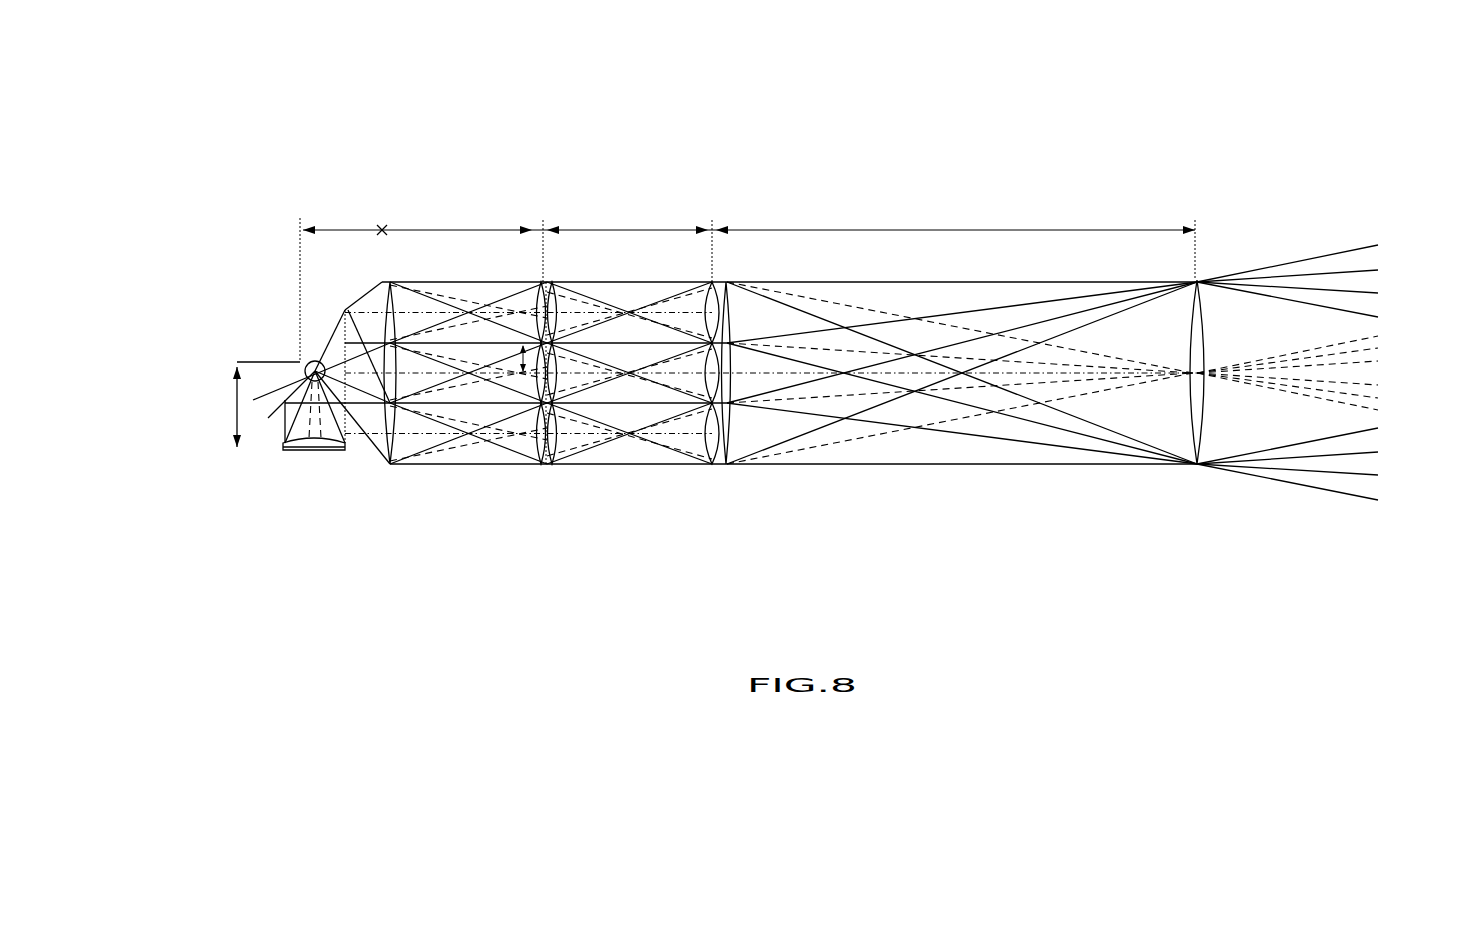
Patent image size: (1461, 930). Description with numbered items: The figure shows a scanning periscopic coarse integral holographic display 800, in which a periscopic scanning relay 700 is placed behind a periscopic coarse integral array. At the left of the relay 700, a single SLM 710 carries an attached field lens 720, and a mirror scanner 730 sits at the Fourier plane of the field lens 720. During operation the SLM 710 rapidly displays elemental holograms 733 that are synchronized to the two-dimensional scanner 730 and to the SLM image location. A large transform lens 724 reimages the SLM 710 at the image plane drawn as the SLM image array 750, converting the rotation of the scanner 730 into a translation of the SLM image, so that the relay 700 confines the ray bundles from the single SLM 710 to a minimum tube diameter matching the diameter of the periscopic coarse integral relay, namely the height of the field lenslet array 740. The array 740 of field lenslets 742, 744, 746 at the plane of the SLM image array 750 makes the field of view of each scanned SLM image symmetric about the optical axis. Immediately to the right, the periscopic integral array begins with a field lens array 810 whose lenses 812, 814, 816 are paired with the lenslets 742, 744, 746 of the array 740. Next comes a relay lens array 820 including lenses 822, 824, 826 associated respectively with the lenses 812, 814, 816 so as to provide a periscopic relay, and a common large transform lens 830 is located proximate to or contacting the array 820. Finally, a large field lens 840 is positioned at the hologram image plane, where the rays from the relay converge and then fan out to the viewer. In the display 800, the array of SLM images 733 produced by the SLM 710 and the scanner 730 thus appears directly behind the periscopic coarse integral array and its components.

The scanning periscopic coarse integral holographic display 800 is at (386, 128).
The periscopic scanning relay 700 is at (548, 632).
The SLM 710 is at (351, 466).
The field lens 720 is at (276, 444).
The large transform lens 724 is at (389, 478).
The mirror scanner 730 is at (305, 350).
The elemental holograms 733 is at (436, 277).
The field lenslet array 740 is at (539, 270).
The field lenslet 742 is at (534, 302).
The field lenslet 744 is at (526, 388).
The field lenslet 746 is at (524, 430).
The SLM image array 750 is at (552, 472).
The field lens array 810 is at (614, 405).
The field lens 812 is at (564, 301).
The field lens 814 is at (564, 363).
The field lens 816 is at (564, 422).
The relay lens array 820 is at (783, 345).
The relay lens 822 is at (700, 319).
The relay lens 824 is at (700, 382).
The relay lens 826 is at (700, 441).
The common large transform lens 830 is at (731, 279).
The large field lens 840 is at (1203, 277).